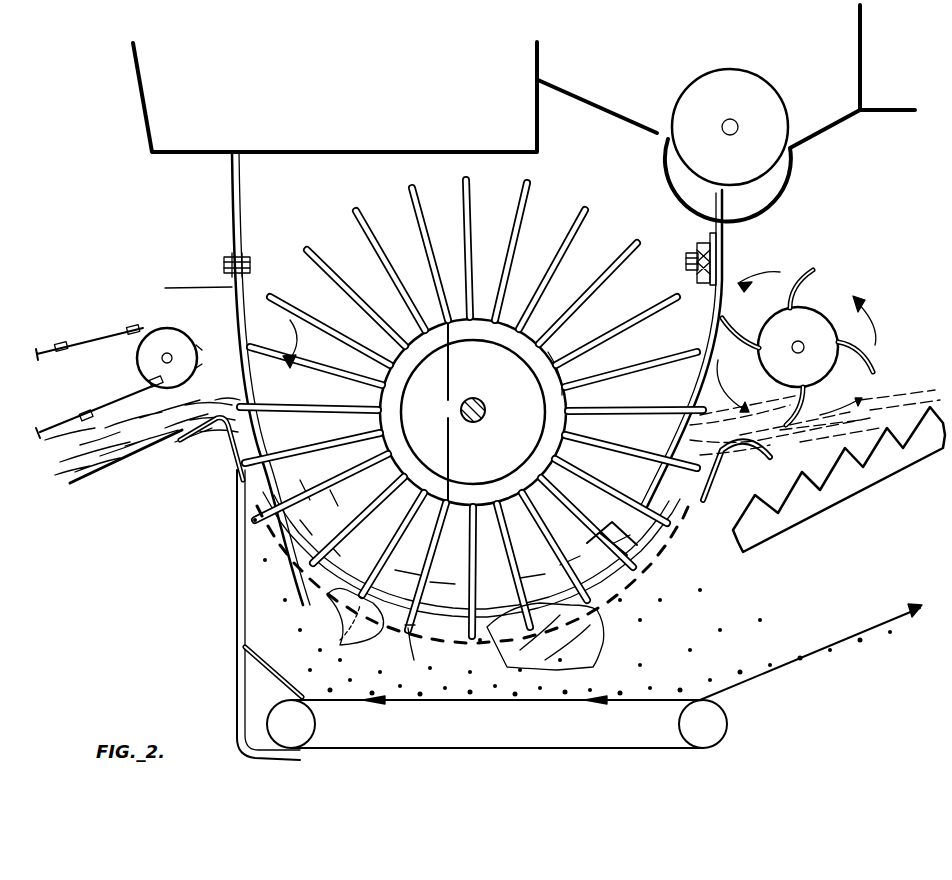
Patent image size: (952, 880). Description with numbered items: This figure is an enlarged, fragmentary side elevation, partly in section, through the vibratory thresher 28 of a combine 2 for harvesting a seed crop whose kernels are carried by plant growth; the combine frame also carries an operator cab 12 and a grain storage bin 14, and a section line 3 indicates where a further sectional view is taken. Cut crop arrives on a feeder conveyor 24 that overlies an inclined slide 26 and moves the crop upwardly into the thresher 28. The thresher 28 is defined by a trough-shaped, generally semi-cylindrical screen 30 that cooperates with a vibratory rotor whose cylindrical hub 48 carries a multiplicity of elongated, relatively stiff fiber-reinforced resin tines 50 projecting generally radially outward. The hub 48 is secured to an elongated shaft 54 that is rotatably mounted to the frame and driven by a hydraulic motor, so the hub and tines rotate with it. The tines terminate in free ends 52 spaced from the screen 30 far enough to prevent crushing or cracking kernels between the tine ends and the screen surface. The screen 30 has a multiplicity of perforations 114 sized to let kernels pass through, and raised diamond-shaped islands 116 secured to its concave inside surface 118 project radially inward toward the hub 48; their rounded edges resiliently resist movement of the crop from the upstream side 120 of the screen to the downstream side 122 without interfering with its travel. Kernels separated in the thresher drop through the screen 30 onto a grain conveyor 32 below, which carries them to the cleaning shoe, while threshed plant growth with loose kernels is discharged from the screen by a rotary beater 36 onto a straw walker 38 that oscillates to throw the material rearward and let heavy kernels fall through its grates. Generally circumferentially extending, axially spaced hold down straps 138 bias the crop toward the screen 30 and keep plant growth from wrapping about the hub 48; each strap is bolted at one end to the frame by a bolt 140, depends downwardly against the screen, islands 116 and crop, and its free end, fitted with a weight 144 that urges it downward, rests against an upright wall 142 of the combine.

The combine 2 is at (88, 167).
The section line 3 is at (530, 599).
The cab 12 is at (143, 85).
The grain storage bin 14 is at (833, 38).
The feeder conveyor 24 is at (103, 412).
The inclined slide 26 is at (103, 472).
The thresher 28 is at (606, 150).
The trough-shaped screen 30 is at (330, 606).
The grain conveyor 32 is at (455, 702).
The rotary beater 36 is at (806, 320).
The straw walker 38 is at (812, 500).
The hub 48 is at (482, 318).
The tines 50 is at (460, 200).
The free ends 52 is at (412, 640).
The shaft 54 is at (486, 406).
The perforations 114 is at (345, 642).
The raised islands 116 is at (595, 660).
The concave inside surface 118 is at (240, 540).
The upstream side 120 is at (240, 442).
The downstream side 122 is at (724, 456).
The hold down straps 138 is at (240, 320).
The bolt 140 is at (252, 264).
The upright wall 142 is at (718, 224).
The weight 144 is at (693, 277).